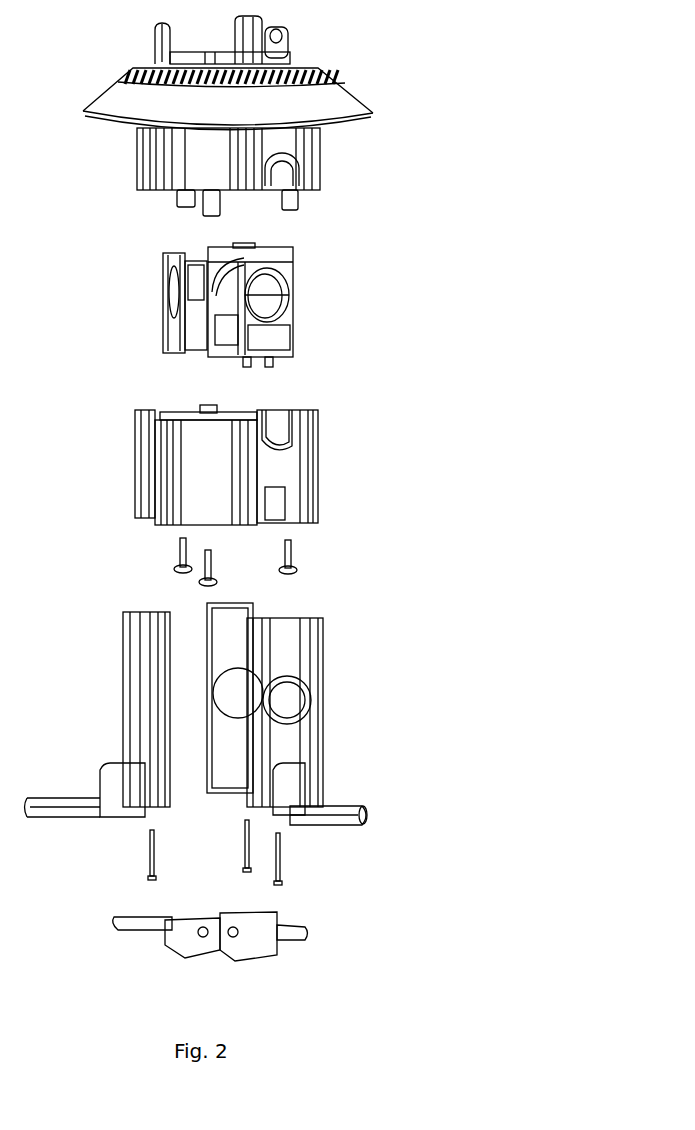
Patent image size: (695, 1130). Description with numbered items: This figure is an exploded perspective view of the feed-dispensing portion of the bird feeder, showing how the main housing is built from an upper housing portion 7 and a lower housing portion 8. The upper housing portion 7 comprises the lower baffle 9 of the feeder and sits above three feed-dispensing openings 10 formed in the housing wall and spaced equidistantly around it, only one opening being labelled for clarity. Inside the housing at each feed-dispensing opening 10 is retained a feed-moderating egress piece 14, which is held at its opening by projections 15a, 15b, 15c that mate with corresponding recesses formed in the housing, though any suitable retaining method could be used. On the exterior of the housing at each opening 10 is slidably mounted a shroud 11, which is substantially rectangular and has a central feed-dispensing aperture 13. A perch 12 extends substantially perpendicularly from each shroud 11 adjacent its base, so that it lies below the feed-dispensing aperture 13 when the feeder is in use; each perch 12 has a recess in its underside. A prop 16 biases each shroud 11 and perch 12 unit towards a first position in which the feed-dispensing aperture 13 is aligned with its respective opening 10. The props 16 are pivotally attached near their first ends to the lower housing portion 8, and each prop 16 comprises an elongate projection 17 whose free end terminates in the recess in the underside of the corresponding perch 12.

The upper housing portion 7 is at (336, 152).
The lower housing portion 8 is at (328, 471).
The lower baffle 9 is at (338, 103).
The feed-dispensing opening 10 is at (322, 186).
The shroud 11 is at (290, 644).
The perch 12 is at (344, 804).
The feed-dispensing aperture 13 is at (292, 698).
The feed-moderating egress piece 14 is at (312, 303).
The projection 15a is at (277, 364).
The projection 15b is at (251, 366).
The projection 15c is at (268, 263).
The prop 16 is at (300, 948).
The elongate projection 17 is at (305, 928).